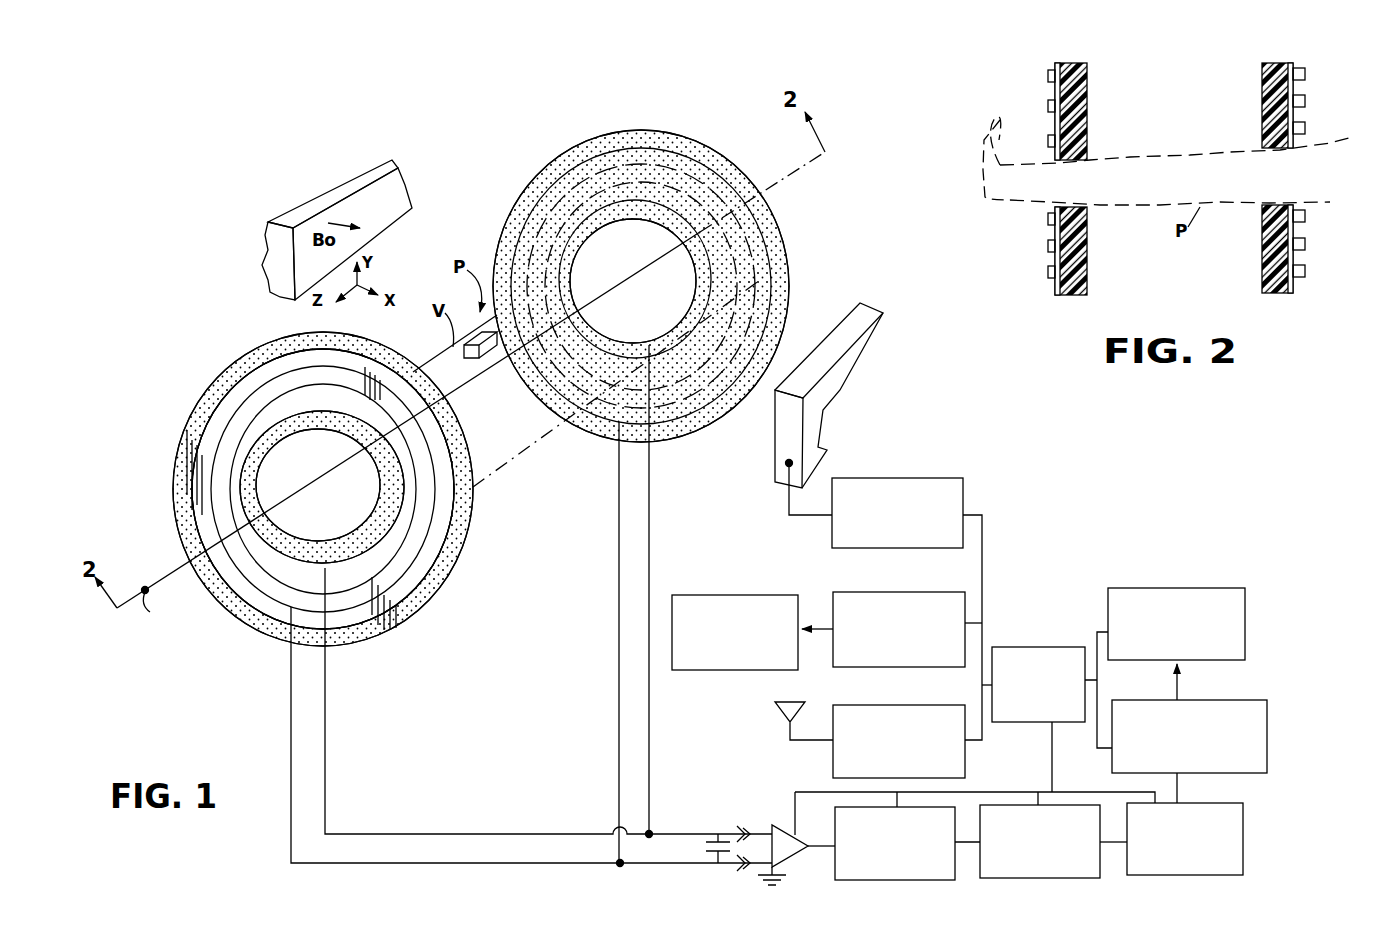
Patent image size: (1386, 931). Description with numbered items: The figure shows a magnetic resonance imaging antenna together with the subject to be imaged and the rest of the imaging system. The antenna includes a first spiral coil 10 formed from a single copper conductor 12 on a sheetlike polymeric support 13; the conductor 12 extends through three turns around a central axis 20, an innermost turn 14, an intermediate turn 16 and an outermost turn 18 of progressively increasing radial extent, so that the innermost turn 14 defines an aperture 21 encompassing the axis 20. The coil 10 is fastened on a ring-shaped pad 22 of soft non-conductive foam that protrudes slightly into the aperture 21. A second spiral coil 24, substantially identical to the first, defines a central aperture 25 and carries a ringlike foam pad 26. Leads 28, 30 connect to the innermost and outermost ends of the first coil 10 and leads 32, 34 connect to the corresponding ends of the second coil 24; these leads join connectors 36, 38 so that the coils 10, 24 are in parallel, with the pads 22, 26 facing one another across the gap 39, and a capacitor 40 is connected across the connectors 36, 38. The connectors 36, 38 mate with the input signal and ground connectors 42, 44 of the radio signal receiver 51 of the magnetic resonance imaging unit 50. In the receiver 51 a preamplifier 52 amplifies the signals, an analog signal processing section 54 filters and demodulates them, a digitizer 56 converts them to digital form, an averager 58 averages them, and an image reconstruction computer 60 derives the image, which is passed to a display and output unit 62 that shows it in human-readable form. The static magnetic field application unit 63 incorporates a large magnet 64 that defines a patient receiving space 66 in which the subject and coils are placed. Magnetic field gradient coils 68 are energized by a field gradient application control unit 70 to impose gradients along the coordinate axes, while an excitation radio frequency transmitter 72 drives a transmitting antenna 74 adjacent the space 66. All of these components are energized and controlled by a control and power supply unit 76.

In FIG. 1, the first spiral coil 10 is at (163, 492).
In FIG. 2, the first spiral coil 10 is at (1041, 173).
In FIG. 1, the conductor 12 is at (453, 547).
In FIG. 1, the support 13 is at (417, 583).
In FIG. 2, the support 13 is at (1048, 263).
In FIG. 1, the innermost turn 14 is at (237, 437).
In FIG. 2, the innermost turn 14 is at (1048, 143).
In FIG. 1, the intermediate turn 16 is at (237, 400).
In FIG. 2, the intermediate turn 16 is at (1048, 105).
In FIG. 1, the outermost turn 18 is at (247, 375).
In FIG. 2, the outermost turn 18 is at (1048, 73).
In FIG. 1, the central axis 20 is at (205, 560).
In FIG. 1, the aperture 21 is at (344, 504).
In FIG. 2, the aperture 21 is at (1078, 186).
In FIG. 1, the ring-shaped pad 22 is at (277, 342).
In FIG. 1, the second spiral coil 24 is at (632, 157).
In FIG. 2, the second spiral coil 24 is at (1308, 107).
In FIG. 1, the central aperture 25 is at (636, 243).
In FIG. 2, the central aperture 25 is at (1311, 168).
In FIG. 1, the ringlike foam pad 26 is at (610, 135).
In FIG. 2, the ringlike foam pad 26 is at (1260, 47).
In FIG. 1, the lead 28 is at (477, 833).
In FIG. 1, the lead 30 is at (492, 865).
In FIG. 1, the lead 32 is at (652, 738).
In FIG. 1, the lead 34 is at (618, 757).
In FIG. 1, the connector 36 is at (735, 825).
In FIG. 1, the connector 38 is at (733, 862).
In FIG. 1, the gap 39 is at (508, 467).
In FIG. 2, the gap 39 is at (1162, 151).
In FIG. 1, the capacitor 40 is at (703, 847).
In FIG. 1, the input signal connector 42 is at (742, 817).
In FIG. 1, the ground connector 44 is at (747, 867).
In FIG. 1, the magnetic resonance imaging unit 50 is at (1047, 589).
In FIG. 1, the radio signal receiver 51 is at (821, 854).
In FIG. 1, the preamplifier 52 is at (778, 822).
In FIG. 1, the analog signal processing section 54 is at (835, 836).
In FIG. 1, the digitizer 56 is at (1003, 805).
In FIG. 1, the averager 58 is at (1203, 801).
In FIG. 1, the image reconstruction computer 60 is at (1200, 698).
In FIG. 1, the display and output 62 is at (1185, 587).
In FIG. 1, the static magnetic field application unit 63 is at (872, 478).
In FIG. 1, the magnet 64 is at (373, 172).
In FIG. 1, the patient receiving space 66 is at (752, 146).
In FIG. 1, the magnetic field gradient coils 68 is at (722, 595).
In FIG. 1, the field gradient application control unit 70 is at (892, 591).
In FIG. 1, the excitation radio frequency transmitter 72 is at (888, 707).
In FIG. 1, the transmitting antenna 74 is at (773, 712).
In FIG. 1, the control and power supply unit 76 is at (1020, 652).